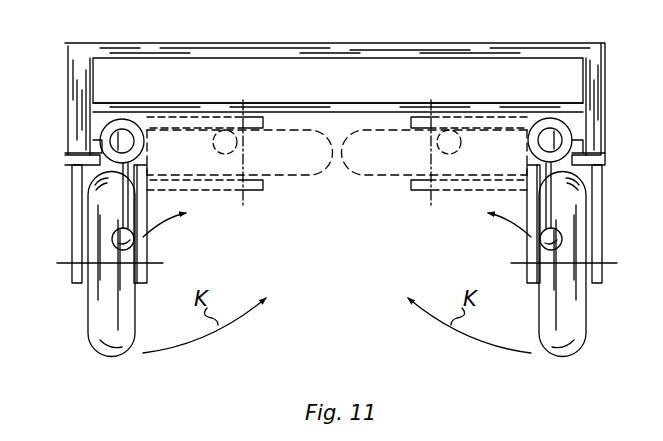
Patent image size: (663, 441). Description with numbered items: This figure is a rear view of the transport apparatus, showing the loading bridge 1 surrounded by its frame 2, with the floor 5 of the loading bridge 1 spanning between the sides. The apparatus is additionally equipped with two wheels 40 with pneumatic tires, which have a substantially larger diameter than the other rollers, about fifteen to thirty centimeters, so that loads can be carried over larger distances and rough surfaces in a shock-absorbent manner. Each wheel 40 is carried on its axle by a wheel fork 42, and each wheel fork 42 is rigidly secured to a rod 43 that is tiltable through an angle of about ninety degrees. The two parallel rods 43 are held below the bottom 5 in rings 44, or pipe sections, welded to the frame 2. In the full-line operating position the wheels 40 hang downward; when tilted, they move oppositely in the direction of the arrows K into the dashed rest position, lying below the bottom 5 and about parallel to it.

The loading bridge 1 is at (321, 87).
The frame 2 is at (80, 60).
The floor 5 is at (550, 106).
The wheel with pneumatic tire 40 is at (98, 327).
The wheel fork 42 is at (72, 253).
The rod 43 is at (110, 144).
The ring 44 is at (110, 124).